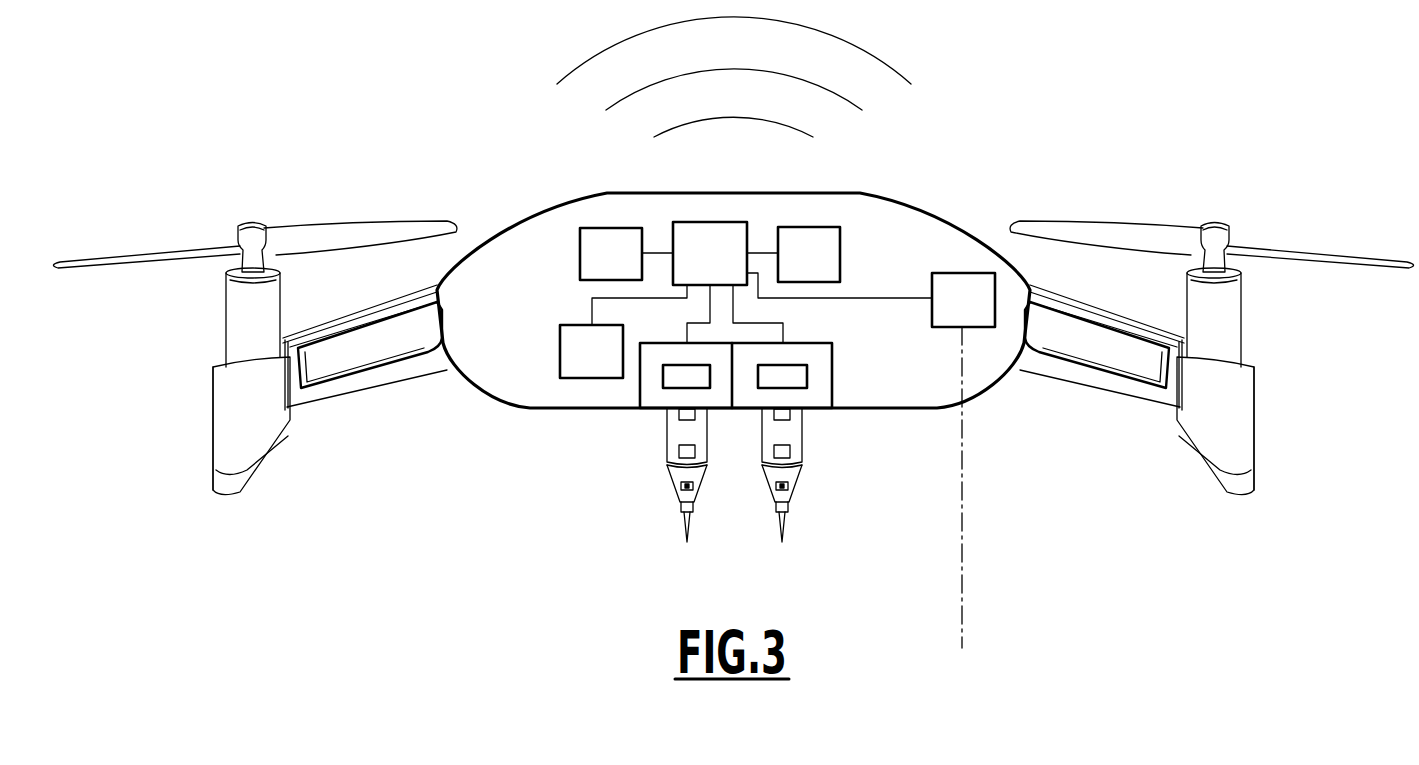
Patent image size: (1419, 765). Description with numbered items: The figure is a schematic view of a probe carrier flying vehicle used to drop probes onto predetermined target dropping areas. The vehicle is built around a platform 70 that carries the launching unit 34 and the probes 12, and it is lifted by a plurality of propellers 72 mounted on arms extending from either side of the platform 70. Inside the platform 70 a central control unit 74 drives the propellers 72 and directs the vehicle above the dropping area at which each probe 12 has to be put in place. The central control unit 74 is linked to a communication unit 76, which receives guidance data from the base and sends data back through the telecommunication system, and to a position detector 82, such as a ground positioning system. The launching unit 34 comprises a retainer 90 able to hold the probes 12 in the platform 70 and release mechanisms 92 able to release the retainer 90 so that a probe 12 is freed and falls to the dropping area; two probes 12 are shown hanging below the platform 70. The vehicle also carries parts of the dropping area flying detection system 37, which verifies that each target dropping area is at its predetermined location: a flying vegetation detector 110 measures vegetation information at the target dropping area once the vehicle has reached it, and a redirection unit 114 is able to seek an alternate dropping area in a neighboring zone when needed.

The probe 12 is at (688, 495).
The launching unit 34 is at (848, 369).
The dropping area flying detection system 37 is at (547, 404).
The platform 70 is at (495, 401).
The propeller 72 is at (250, 192).
The central control unit 74 is at (696, 268).
The communication unit 76 is at (795, 269).
The position detector 82 is at (597, 269).
The retainer 90 is at (832, 388).
The release mechanism 92 is at (697, 380).
The flying vegetation detector 110 is at (943, 313).
The redirection unit 114 is at (611, 368).